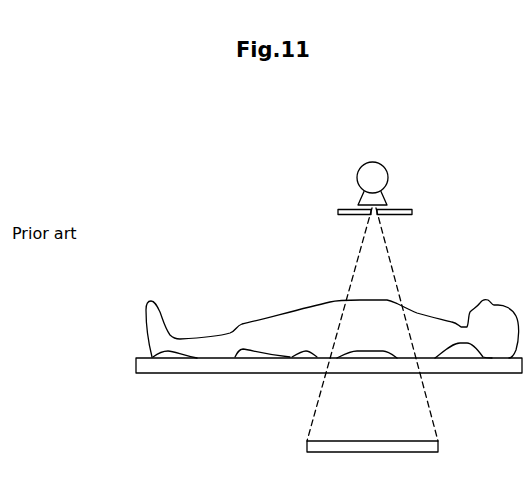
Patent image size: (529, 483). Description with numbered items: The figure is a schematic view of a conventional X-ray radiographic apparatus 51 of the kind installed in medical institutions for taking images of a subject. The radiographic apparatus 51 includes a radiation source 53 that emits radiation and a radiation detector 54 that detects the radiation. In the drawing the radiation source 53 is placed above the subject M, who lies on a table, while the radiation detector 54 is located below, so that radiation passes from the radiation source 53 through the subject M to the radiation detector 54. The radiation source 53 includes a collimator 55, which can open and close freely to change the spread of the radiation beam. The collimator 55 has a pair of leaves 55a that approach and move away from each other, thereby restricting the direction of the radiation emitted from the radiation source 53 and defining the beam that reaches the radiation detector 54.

The radiographic apparatus 51 is at (96, 139).
The radiation source 53 is at (375, 163).
The radiation detector 54 is at (440, 443).
The collimator 55 is at (338, 212).
The leaves 55a is at (345, 217).
The subject (patient) M is at (255, 324).